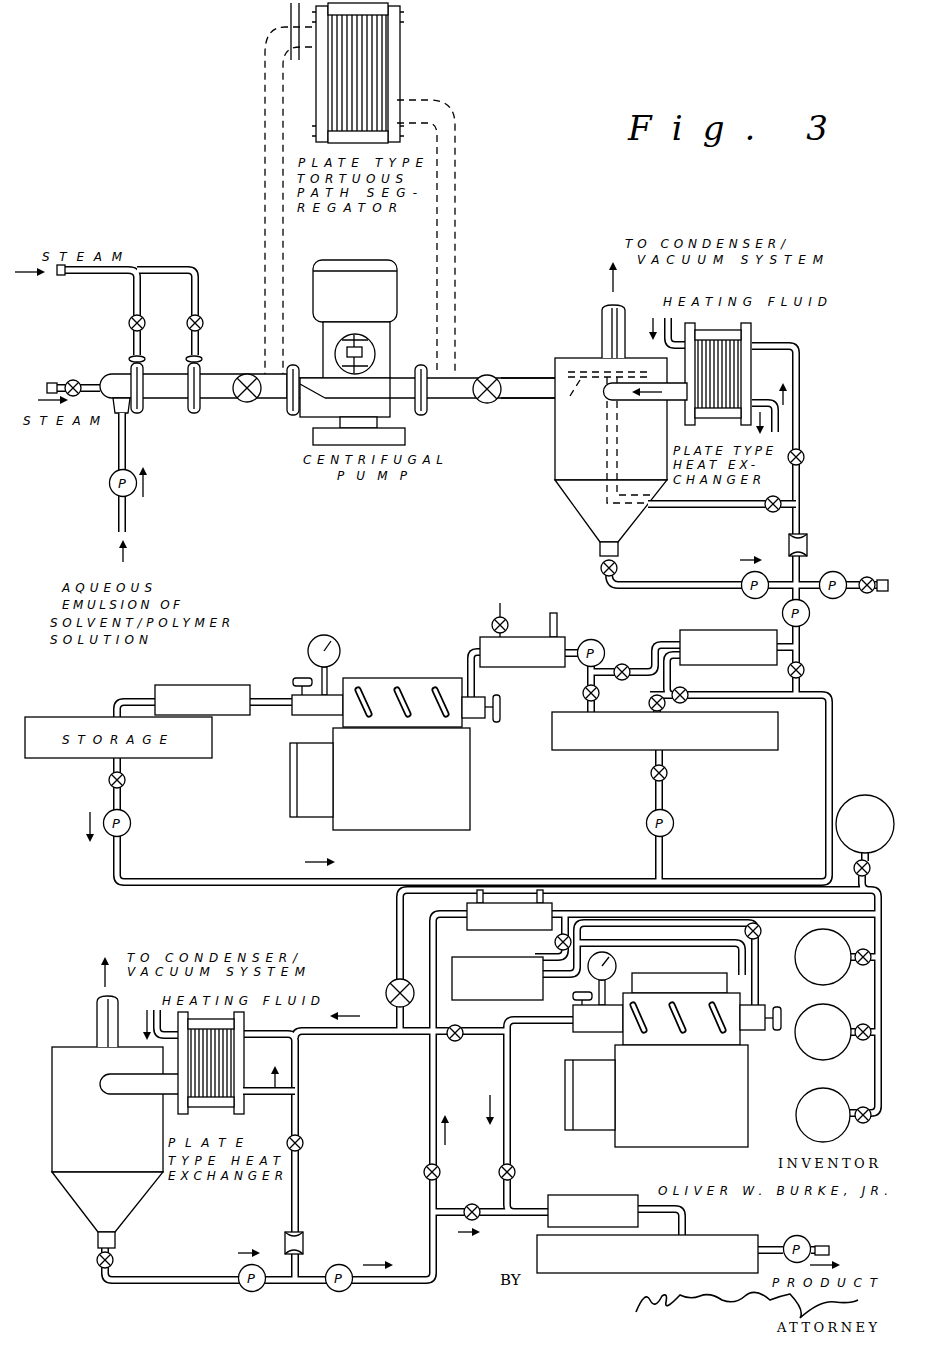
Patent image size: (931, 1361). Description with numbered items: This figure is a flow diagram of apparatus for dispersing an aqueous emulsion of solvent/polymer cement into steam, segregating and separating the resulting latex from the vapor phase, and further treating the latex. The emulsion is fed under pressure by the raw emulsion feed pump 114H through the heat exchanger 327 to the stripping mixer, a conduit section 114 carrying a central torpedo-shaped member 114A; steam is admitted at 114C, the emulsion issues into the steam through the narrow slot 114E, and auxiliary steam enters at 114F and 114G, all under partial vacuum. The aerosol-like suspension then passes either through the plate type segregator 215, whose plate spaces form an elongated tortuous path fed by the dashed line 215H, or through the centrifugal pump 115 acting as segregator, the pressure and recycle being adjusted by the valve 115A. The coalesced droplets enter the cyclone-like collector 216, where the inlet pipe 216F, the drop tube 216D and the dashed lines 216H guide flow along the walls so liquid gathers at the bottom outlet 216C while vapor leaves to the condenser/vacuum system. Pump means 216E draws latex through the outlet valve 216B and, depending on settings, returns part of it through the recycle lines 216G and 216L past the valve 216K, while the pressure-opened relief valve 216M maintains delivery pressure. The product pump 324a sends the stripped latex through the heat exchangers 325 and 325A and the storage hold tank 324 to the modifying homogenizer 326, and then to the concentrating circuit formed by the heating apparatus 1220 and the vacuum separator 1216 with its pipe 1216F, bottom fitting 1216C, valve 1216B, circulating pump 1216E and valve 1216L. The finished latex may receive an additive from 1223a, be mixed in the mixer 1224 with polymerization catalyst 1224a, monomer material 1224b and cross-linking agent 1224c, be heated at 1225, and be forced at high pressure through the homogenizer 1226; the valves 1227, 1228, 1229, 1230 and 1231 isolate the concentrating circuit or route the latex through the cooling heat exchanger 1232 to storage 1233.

The conduit section 114 is at (110, 400).
The torpedo-shaped member 114A is at (245, 401).
The steam admission 114C is at (89, 383).
The narrow slot 114E is at (125, 447).
The auxiliary steam inlet 114F is at (142, 374).
The auxiliary steam inlet 114G is at (202, 372).
The pump 114H is at (110, 487).
The centrifugal pump 115 is at (375, 387).
The valve 115A is at (477, 397).
The plate type segregator 215 is at (377, 40).
The inlet 215H is at (437, 116).
The separator or collector 216 is at (590, 512).
The outlet valve 216B is at (600, 572).
The bottom outlet 216C is at (618, 551).
The drop tube 216D is at (604, 330).
The pump means 216E is at (747, 580).
The inlet pipe 216F is at (630, 400).
The recycle line 216G is at (730, 504).
The feed line 216H is at (547, 404).
The valve 216K is at (782, 504).
The recycle line 216L is at (805, 458).
The relief valve 216M is at (808, 545).
The storage hold tank 324 is at (573, 751).
The product pump 324a is at (808, 627).
The heat exchanger 325 is at (713, 623).
The heat exchanger 325A is at (487, 637).
The homogenizer 326 is at (418, 665).
The heat exchanger 327 is at (210, 675).
The separator 1216 is at (127, 1198).
The tank outlet valve 1216B is at (100, 1267).
The tank outlet fitting 1216C is at (116, 1242).
The circulating pump 1216E is at (247, 1291).
The inlet pipe 1216F is at (138, 1085).
The valve 1216L is at (302, 1140).
The heating apparatus 1220 is at (283, 1092).
The additive supply 1223a is at (873, 797).
The mixer 1224 is at (492, 957).
The polymerization catalyst 1224a is at (847, 912).
The monomer material 1224b is at (843, 1004).
The cross-linking agent 1224c is at (840, 1083).
The heater 1225 is at (517, 903).
The homogenizer 1226 is at (678, 1147).
The valve 1227 is at (458, 1041).
The valve 1228 is at (388, 988).
The valve 1229 is at (422, 1175).
The valve 1230 is at (518, 1172).
The valve 1231 is at (477, 1198).
The heat exchanger 1232 is at (593, 1186).
The storage 1233 is at (581, 1274).